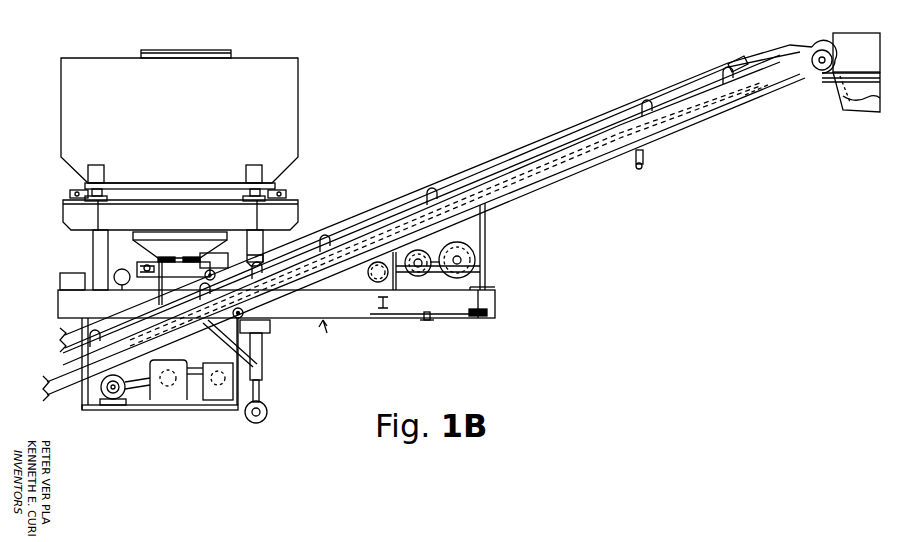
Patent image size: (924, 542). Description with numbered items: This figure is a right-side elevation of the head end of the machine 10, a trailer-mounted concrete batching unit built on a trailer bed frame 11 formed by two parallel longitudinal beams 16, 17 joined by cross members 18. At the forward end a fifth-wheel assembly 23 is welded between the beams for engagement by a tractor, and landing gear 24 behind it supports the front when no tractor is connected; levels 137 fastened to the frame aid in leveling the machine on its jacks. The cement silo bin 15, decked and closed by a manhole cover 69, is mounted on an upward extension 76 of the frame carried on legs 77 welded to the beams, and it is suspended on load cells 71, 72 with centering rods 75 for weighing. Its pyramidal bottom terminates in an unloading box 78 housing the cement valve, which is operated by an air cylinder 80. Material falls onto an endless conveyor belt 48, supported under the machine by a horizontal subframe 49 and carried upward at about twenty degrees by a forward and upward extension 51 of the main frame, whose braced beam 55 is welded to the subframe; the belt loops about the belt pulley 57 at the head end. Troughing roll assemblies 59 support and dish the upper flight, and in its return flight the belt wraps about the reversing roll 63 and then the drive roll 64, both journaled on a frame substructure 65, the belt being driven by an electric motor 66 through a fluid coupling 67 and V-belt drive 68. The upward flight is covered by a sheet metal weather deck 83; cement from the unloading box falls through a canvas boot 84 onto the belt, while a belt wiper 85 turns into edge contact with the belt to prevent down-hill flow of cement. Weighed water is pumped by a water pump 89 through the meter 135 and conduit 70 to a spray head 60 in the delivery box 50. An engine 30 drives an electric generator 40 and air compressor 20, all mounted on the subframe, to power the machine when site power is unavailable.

The machine 10 is at (334, 332).
The trailer bed frame 11 is at (58, 300).
The bin 15 is at (298, 103).
The longitudinal beam 16 is at (470, 302).
The longitudinal beam 17 is at (366, 318).
The cross member 18 is at (495, 294).
The air compressor 20 is at (220, 400).
The fifth-wheel assembly 23 is at (432, 318).
The landing gear 24 is at (262, 362).
The engine 30 is at (165, 400).
The electric generator 40 is at (117, 400).
The endless conveyor belt 48 is at (62, 395).
The horizontal subframe 49 is at (192, 405).
The delivery box 50 is at (876, 64).
The forward and upward extension 51 is at (712, 118).
The braced beam 55 is at (748, 103).
The belt pulley 57 is at (820, 48).
The troughing roll assembly 59 is at (324, 240).
The spray head 60 is at (878, 94).
The reversing roll 63 is at (418, 277).
The drive roll 64 is at (478, 256).
The frame substructure 65 is at (486, 270).
The electric motor 66 is at (368, 275).
The fluid coupling 67 is at (378, 298).
The V-belt drive 68 is at (433, 278).
The manhole cover 69 is at (166, 50).
The conduit 70 is at (782, 86).
The load cell 71 is at (85, 184).
The load cell 72 is at (268, 186).
The centering rod 75 is at (70, 194).
The upward extension 76 is at (63, 216).
The leg 77 is at (93, 270).
The unloading box 78 is at (200, 272).
The air cylinder 80 is at (231, 260).
The weather deck 83 is at (98, 326).
The canvas boot 84 is at (159, 296).
The belt wiper 85 is at (166, 292).
The water pump 89 is at (60, 278).
The meter 135 is at (122, 269).
The level 137 is at (495, 312).